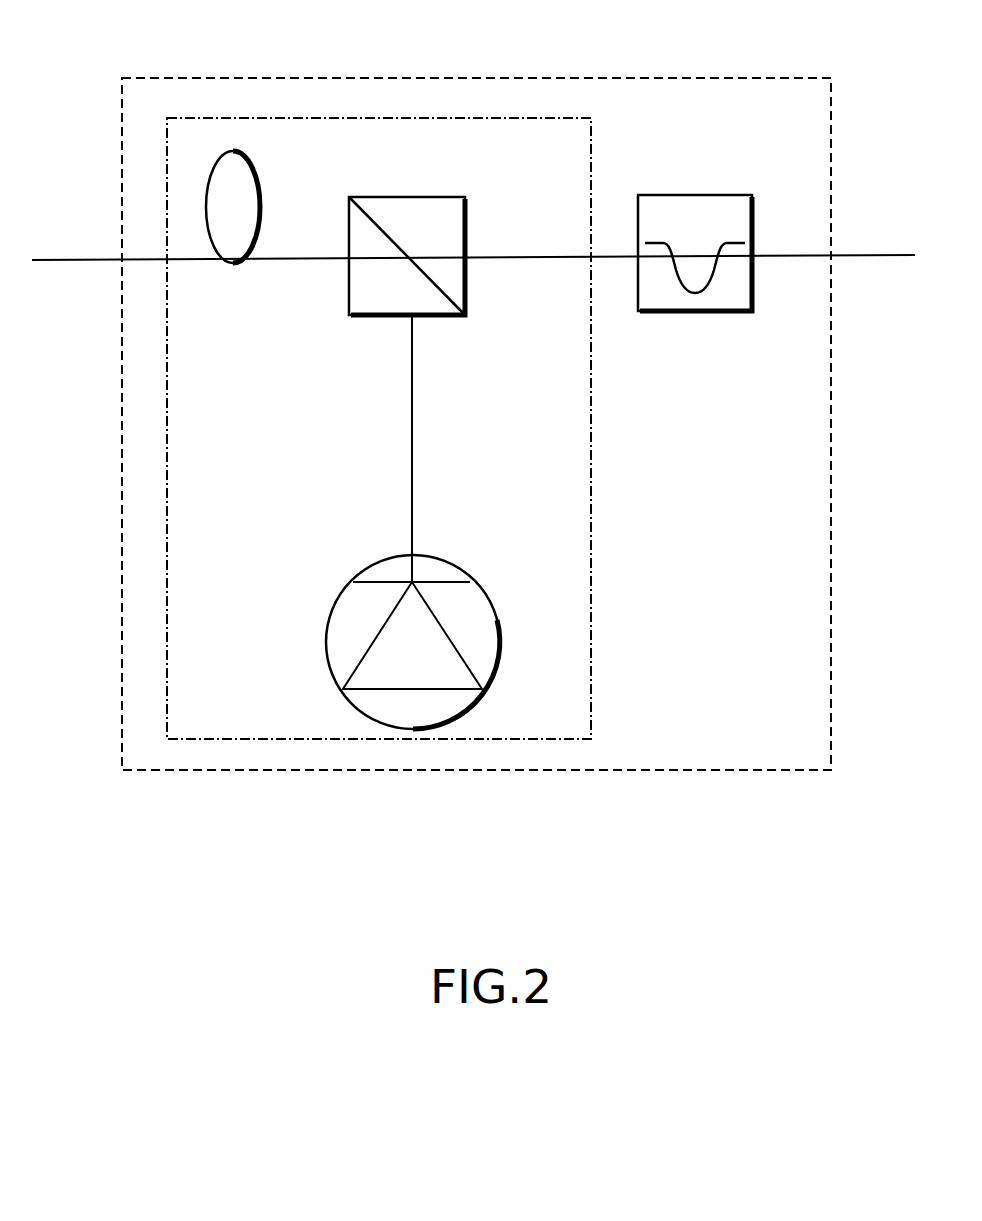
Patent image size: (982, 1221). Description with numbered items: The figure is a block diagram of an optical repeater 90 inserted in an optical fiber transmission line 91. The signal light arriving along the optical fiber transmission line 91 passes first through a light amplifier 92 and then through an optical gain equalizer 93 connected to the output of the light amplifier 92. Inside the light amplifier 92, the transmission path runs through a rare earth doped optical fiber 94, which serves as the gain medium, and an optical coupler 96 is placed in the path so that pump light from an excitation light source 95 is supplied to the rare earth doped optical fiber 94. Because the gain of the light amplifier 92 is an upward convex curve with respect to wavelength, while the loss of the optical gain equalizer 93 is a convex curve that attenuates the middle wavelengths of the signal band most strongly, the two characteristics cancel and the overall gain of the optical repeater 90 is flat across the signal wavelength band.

The optical repeater 90 is at (443, 770).
The optical fiber transmission line 91 is at (80, 260).
The light amplifier 92 is at (370, 118).
The optical gain equalizer 93 is at (700, 195).
The rare earth doped optical fiber 94 is at (258, 188).
The excitation light source 95 is at (440, 557).
The optical coupler 96 is at (430, 197).